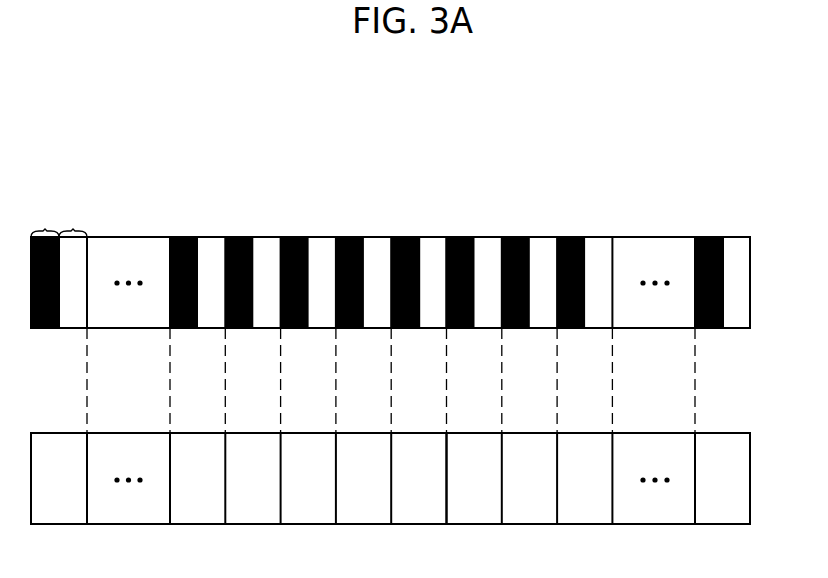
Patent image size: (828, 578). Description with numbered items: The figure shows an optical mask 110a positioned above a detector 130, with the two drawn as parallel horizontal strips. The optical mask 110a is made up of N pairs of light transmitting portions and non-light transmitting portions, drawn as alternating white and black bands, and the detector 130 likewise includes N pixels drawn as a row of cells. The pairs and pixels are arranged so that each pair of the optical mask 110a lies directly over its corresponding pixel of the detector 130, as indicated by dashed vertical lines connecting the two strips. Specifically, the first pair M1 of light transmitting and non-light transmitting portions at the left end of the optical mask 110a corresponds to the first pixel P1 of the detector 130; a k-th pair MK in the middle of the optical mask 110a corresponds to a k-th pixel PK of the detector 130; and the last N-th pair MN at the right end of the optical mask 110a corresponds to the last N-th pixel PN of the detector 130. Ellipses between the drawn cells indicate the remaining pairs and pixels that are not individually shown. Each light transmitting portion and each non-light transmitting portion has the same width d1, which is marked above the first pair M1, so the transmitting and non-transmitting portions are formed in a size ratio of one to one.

The optical mask 110a is at (715, 236).
The detector 130 is at (713, 432).
The first pair M1 is at (59, 298).
The k-th pair MK is at (418, 298).
The N-th pair MN is at (722, 298).
The width d1 is at (59, 224).
The first pixel P1 is at (59, 494).
The k-th pixel PK is at (418, 495).
The N-th pixel PN is at (722, 495).